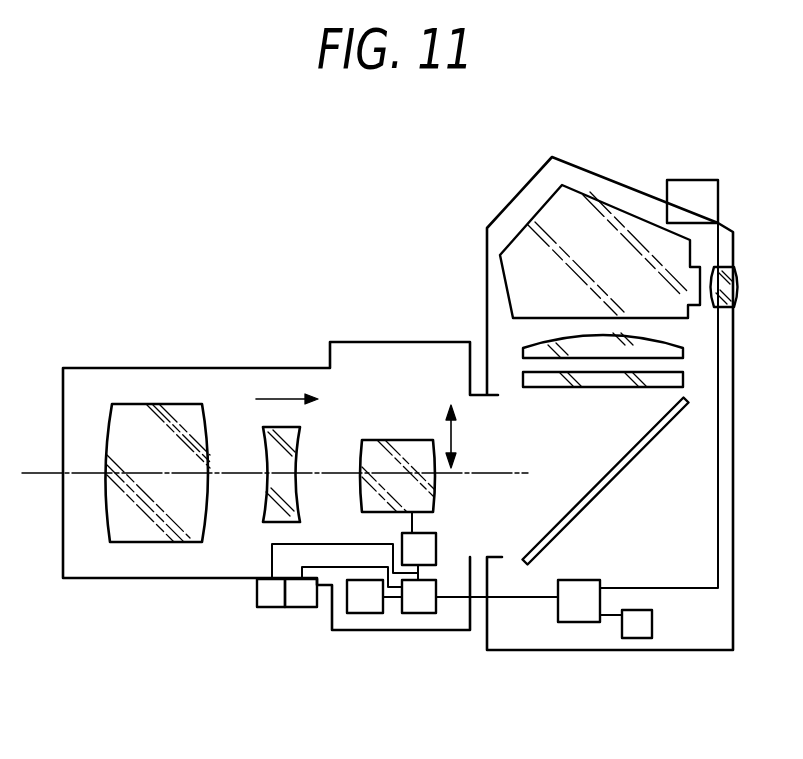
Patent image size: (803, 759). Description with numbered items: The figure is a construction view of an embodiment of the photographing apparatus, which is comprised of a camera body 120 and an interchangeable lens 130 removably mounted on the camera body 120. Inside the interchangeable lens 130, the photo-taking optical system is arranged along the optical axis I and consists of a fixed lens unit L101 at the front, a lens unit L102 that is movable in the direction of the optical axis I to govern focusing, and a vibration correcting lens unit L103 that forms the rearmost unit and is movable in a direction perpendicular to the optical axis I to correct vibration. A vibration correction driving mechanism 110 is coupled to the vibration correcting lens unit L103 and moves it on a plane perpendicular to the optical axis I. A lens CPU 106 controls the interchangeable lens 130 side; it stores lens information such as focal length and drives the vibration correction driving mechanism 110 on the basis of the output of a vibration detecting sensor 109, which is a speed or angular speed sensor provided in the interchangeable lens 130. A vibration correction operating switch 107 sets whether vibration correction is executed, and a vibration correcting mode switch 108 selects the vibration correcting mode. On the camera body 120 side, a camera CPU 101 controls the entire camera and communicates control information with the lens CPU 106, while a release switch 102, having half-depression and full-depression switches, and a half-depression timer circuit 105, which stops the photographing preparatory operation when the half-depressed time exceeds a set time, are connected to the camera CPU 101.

The interchangeable lens 130 is at (187, 271).
The camera body 120 is at (618, 170).
The release switch 102 is at (692, 190).
The fixed lens unit L101 is at (142, 406).
The lens unit L102 is at (263, 430).
The vibration correcting lens unit L103 is at (385, 438).
The optical axis I is at (37, 472).
The vibration correction driving mechanism 110 is at (436, 553).
The lens CPU 106 is at (417, 608).
The vibration detecting sensor 109 is at (363, 606).
The vibration correction operating switch 107 is at (268, 600).
The vibration correcting mode switch 108 is at (302, 600).
The camera CPU 101 is at (570, 616).
The half-depression timer circuit 105 is at (637, 633).